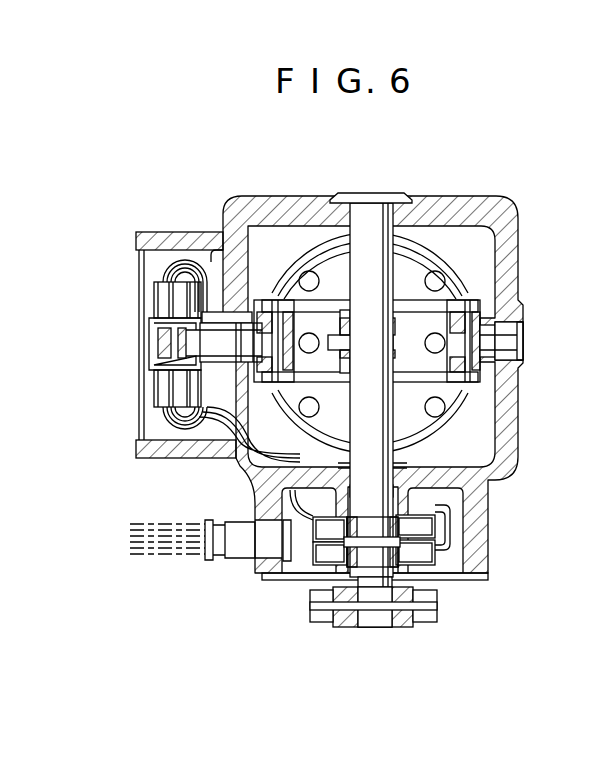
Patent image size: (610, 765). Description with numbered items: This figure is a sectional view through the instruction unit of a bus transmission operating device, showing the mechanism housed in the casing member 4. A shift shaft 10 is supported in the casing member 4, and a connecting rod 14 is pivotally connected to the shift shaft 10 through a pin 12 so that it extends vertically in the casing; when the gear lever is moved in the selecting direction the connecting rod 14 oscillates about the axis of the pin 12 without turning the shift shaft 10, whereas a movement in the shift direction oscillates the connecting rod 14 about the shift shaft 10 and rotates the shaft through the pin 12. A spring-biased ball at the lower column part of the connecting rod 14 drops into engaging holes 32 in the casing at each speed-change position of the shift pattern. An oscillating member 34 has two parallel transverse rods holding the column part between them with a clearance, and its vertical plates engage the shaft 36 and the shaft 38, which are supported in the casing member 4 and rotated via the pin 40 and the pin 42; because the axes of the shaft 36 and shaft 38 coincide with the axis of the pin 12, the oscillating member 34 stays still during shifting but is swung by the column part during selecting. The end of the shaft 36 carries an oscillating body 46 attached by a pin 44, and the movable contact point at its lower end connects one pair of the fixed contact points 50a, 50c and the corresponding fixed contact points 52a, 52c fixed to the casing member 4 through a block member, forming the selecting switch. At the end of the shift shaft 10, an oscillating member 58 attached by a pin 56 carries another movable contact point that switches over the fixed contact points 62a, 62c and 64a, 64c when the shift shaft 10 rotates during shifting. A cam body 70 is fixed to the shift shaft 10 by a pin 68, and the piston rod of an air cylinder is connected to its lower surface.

The casing member 4 is at (513, 456).
The shift shaft 10 is at (372, 202).
The pin 12 is at (395, 330).
The connecting rod 14 is at (348, 316).
The engaging holes 32 is at (440, 278).
The oscillating member 34 is at (482, 300).
The shaft 36 is at (165, 362).
The shaft 38 is at (505, 340).
The pin 40 is at (272, 300).
The pin 42 is at (472, 385).
The pin 44 is at (172, 340).
The oscillating body 46 is at (160, 322).
The fixed contact point 50a is at (158, 292).
The fixed contact point 50c is at (160, 393).
The fixed contact point 52a is at (192, 270).
The fixed contact point 52c is at (172, 418).
The pin 56 is at (398, 556).
The oscillating member 58 is at (412, 578).
The fixed contact point 62a is at (328, 556).
The fixed contact point 62c is at (430, 548).
The fixed contact point 64a is at (325, 530).
The fixed contact point 64c is at (430, 524).
The pin 68 is at (405, 612).
The cam body 70 is at (395, 614).